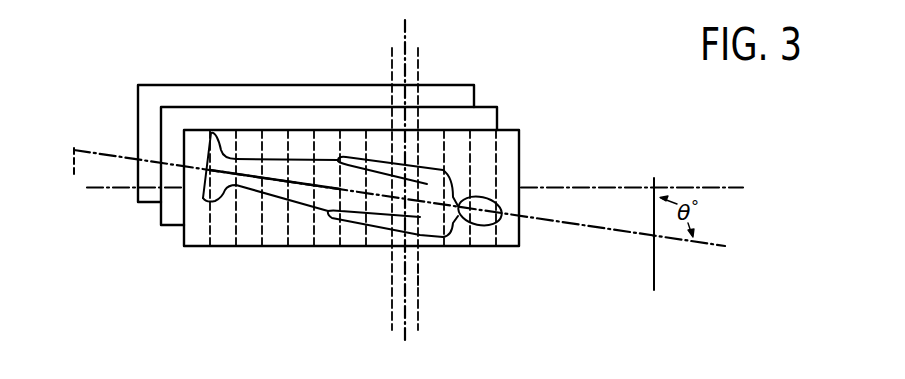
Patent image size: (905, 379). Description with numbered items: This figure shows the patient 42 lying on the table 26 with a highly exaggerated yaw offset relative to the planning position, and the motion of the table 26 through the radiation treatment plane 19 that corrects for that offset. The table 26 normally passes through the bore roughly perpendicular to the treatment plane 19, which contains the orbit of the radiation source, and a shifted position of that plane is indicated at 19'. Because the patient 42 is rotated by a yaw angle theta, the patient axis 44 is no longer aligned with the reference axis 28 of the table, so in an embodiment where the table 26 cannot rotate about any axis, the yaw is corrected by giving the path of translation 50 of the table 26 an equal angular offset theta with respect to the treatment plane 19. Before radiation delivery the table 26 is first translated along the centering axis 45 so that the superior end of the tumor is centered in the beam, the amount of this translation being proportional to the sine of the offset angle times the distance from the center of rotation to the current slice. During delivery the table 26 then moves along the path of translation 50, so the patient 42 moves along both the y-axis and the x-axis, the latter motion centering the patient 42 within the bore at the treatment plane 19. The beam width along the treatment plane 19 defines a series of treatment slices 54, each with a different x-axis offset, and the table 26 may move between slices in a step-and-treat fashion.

The treatment plane 19 is at (680, 256).
The shifted treatment plane 19' is at (440, 180).
The table 26 is at (222, 235).
The horizontal table axis 28 is at (118, 188).
The patient 42 is at (353, 202).
The patient axis 44 is at (120, 150).
The centering axis 45 is at (74, 160).
The path of translation 50 is at (654, 236).
The treatment slice 54 is at (418, 275).